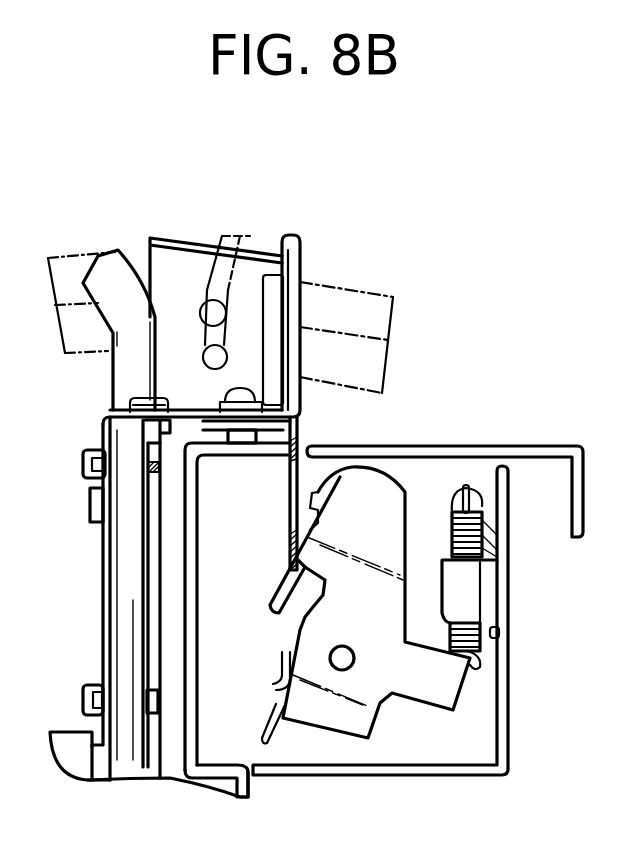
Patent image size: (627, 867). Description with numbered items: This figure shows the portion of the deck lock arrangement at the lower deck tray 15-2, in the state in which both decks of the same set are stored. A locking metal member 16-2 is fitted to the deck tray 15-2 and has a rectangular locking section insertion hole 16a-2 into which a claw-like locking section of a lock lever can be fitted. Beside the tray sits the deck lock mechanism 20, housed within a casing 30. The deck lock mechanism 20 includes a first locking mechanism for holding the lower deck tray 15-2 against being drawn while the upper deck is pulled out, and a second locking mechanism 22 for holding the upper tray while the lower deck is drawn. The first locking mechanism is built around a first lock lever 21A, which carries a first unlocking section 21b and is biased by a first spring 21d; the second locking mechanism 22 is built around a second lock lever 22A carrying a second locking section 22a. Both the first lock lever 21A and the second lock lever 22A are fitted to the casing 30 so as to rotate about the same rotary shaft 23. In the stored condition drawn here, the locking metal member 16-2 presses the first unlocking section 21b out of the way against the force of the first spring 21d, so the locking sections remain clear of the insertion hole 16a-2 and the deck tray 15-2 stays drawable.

The deck tray 15-2 is at (153, 623).
The locking metal member 16-2 is at (297, 457).
The locking section insertion hole 16a-2 is at (327, 463).
The deck lock mechanism 20 is at (392, 462).
The first lock lever 21A is at (388, 556).
The first unlocking section 21b is at (292, 563).
The first spring 21d is at (481, 518).
The second locking mechanism 22 is at (309, 585).
The second lock lever 22A is at (305, 486).
The second locking section 22a is at (316, 501).
The rotary shaft 23 is at (340, 670).
The casing 30 is at (410, 777).